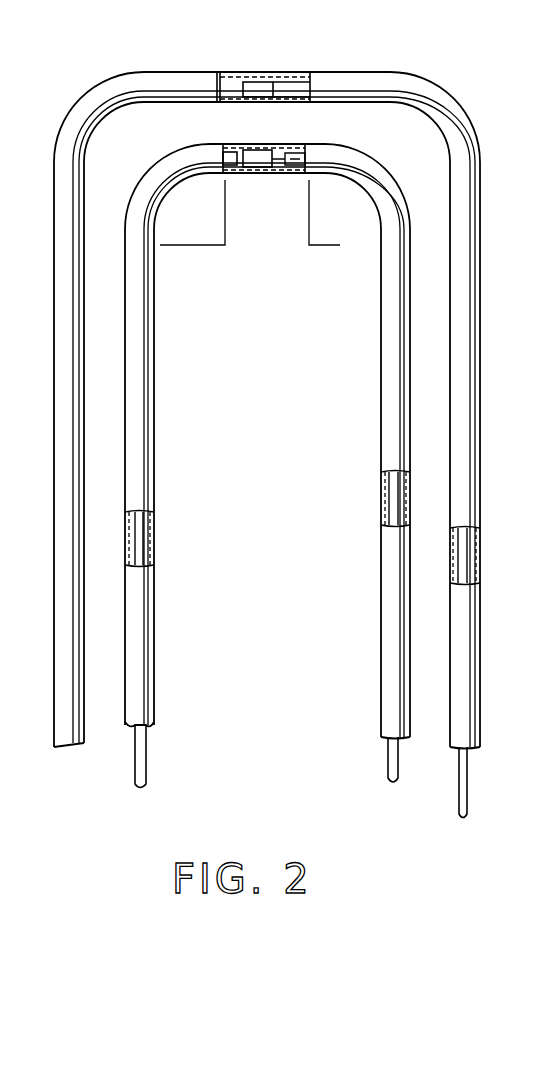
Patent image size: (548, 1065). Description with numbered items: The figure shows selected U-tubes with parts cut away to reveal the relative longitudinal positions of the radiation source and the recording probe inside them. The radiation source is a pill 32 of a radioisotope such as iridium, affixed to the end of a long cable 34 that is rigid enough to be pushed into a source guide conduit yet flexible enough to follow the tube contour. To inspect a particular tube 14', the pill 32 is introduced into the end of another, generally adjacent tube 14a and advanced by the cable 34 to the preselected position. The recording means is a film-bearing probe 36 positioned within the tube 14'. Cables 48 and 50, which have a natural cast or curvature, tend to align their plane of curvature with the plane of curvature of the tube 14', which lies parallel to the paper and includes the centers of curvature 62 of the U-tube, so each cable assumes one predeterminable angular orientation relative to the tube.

The tube 14a is at (143, 73).
The pill 32 is at (258, 88).
The tube 14' is at (262, 430).
The probe 36 is at (268, 173).
The centers of curvature 62 is at (225, 245).
The cable 48 is at (147, 765).
The cable 50 is at (388, 762).
The cable 34 is at (459, 811).